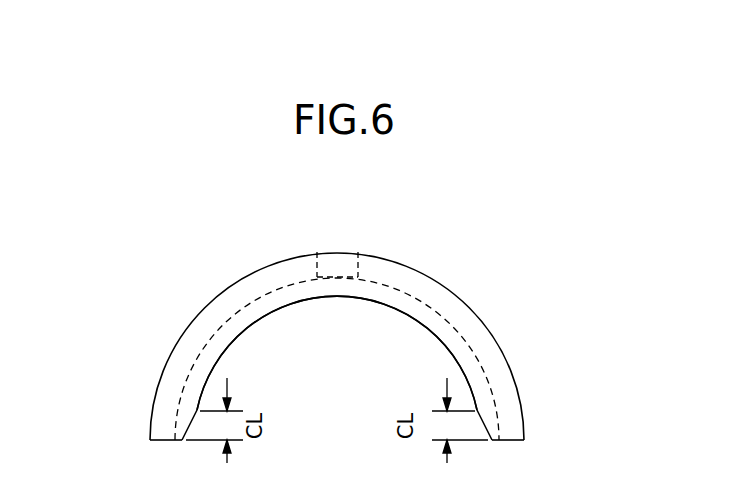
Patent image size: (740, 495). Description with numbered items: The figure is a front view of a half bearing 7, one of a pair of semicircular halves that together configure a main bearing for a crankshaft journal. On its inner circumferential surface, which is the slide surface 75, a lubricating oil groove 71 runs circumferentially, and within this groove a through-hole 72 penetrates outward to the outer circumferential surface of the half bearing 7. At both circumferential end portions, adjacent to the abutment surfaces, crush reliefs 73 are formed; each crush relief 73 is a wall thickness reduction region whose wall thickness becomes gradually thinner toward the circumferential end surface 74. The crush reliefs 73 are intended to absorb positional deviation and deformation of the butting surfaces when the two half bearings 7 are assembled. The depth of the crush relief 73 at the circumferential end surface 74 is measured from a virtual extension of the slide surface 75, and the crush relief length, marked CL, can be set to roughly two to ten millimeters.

The half bearing 7 is at (493, 256).
The lubricating oil groove 71 is at (190, 362).
The through-hole 72 is at (343, 268).
The crush relief 73 is at (190, 426).
The circumferential end surface 74 is at (163, 442).
The slide surface 75 is at (368, 306).